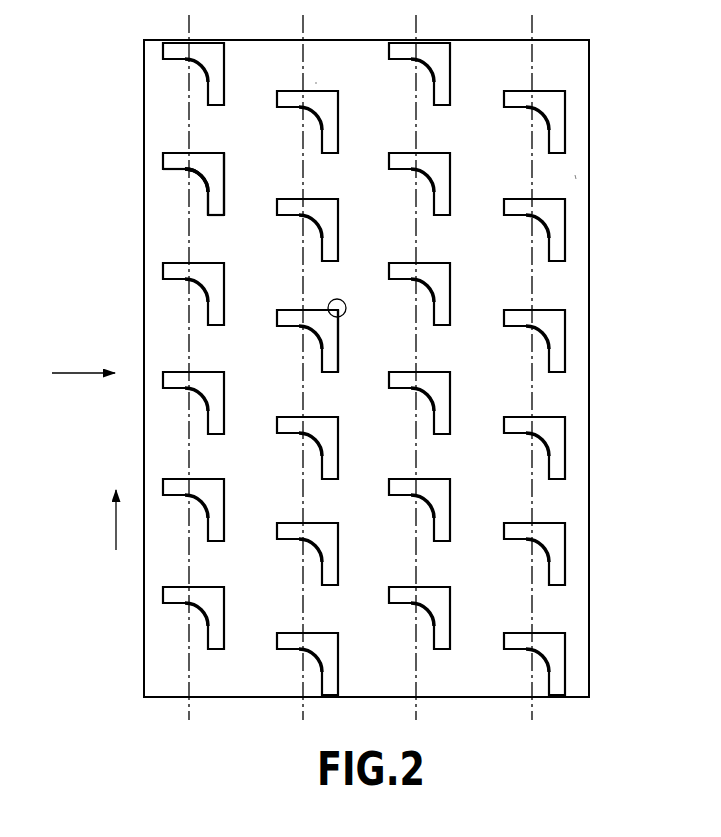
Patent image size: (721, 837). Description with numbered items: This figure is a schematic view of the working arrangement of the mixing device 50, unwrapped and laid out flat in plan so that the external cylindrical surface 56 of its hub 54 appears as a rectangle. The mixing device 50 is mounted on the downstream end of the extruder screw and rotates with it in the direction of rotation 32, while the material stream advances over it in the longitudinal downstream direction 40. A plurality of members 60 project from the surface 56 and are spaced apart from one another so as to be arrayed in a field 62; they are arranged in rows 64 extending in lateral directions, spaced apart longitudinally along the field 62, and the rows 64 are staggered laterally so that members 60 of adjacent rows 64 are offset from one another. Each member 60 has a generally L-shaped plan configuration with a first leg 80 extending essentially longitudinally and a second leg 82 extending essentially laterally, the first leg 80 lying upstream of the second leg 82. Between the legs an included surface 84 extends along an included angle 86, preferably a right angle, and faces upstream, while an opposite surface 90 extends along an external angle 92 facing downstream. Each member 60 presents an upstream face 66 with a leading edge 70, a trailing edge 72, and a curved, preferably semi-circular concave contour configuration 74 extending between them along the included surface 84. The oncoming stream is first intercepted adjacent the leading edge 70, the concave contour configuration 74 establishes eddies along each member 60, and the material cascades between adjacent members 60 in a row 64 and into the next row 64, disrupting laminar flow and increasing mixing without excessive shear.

The direction of rotation 32 is at (115, 550).
The longitudinal downstream direction 40 is at (60, 374).
The mixing device 50 is at (590, 225).
The hub 54 is at (590, 280).
The external cylindrical surface 56 is at (573, 177).
The member 60 is at (224, 43).
The field 62 is at (316, 80).
The row 64 is at (305, 393).
The upstream face 66 is at (200, 177).
The leading edge 70 is at (180, 168).
The trailing edge 72 is at (204, 200).
The concave contour configuration 74 is at (190, 175).
The first leg 80 is at (168, 153).
The second leg 82 is at (222, 207).
The included surface 84 is at (207, 187).
The included angle 86 is at (208, 154).
The opposite surface 90 is at (338, 348).
The external angle 92 is at (348, 302).